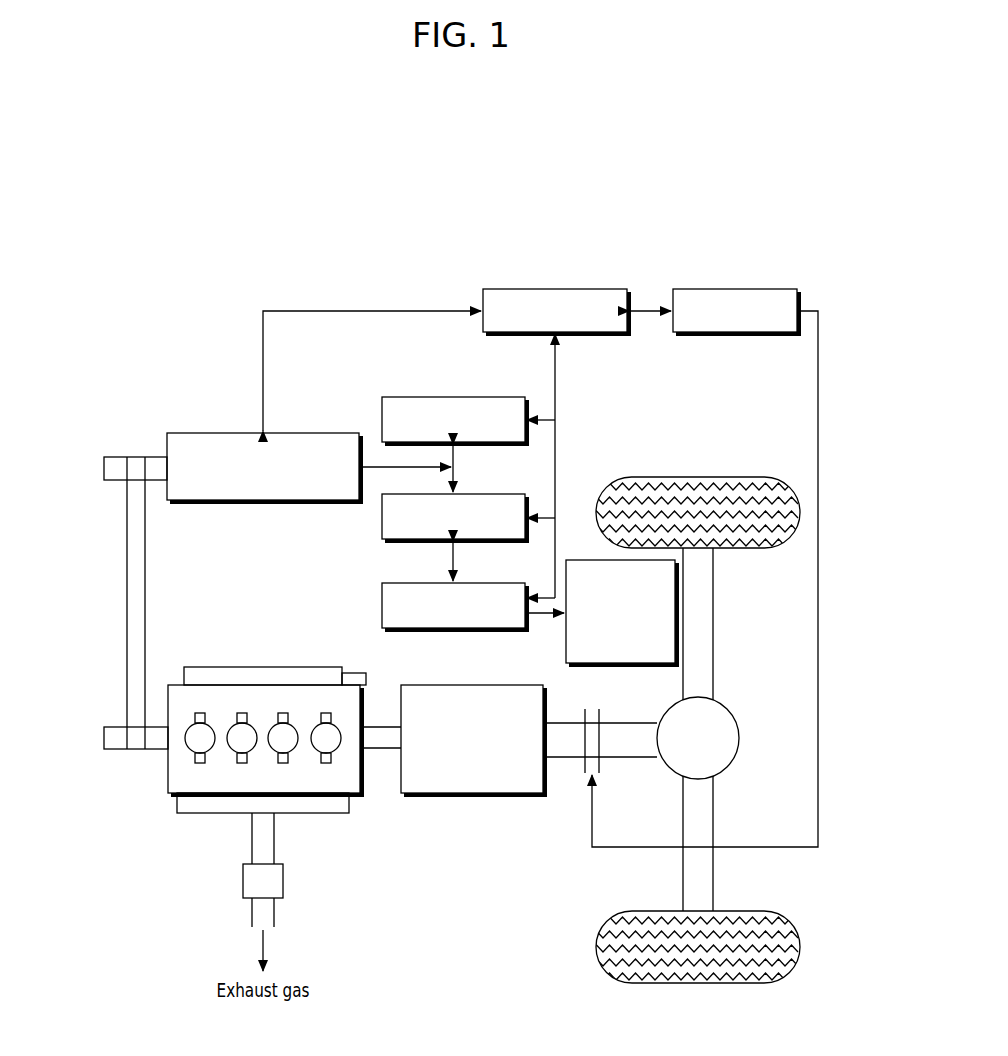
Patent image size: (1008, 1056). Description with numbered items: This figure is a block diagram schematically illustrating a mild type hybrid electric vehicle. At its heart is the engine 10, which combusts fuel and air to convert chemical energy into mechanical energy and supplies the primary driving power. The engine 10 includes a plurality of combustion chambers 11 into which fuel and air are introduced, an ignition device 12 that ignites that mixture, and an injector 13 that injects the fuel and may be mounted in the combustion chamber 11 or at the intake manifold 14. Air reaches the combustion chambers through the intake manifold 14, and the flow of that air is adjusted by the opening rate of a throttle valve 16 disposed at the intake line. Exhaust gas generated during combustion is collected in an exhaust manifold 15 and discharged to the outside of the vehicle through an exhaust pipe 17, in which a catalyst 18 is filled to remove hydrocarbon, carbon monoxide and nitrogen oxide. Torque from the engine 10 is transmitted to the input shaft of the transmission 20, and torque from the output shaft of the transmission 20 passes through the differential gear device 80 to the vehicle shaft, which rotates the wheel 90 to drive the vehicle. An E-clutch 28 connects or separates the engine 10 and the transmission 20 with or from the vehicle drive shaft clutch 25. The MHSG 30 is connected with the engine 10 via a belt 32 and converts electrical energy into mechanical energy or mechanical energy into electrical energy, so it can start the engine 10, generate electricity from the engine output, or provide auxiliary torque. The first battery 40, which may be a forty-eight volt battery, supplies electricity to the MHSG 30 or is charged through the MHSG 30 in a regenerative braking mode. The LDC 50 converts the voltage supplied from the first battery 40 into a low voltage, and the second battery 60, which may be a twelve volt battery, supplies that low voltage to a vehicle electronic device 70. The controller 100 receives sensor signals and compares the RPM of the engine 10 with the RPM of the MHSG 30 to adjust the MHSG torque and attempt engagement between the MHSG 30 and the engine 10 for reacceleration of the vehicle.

The engine 10 is at (372, 692).
The combustion chamber 11 is at (183, 738).
The ignition device 12 is at (195, 713).
The injector 13 is at (192, 758).
The intake manifold 14 is at (242, 667).
The exhaust manifold 15 is at (177, 803).
The throttle valve 16 is at (354, 673).
The exhaust pipe 17 is at (274, 840).
The catalyst 18 is at (283, 880).
The transmission 20 is at (513, 793).
The vehicle drive shaft clutch 25 is at (599, 765).
The E-clutch 28 is at (765, 289).
The mild hybrid starter & generator (MHSG) 30 is at (309, 433).
The belt 32 is at (146, 565).
The first battery 40 is at (481, 397).
The low voltage DC-DC converter (LDC) 50 is at (481, 494).
The second battery 60 is at (382, 596).
The vehicle electronic device 70 is at (636, 663).
The differential gear device 80 is at (740, 738).
The wheel 90 is at (696, 477).
The controller 100 is at (585, 289).